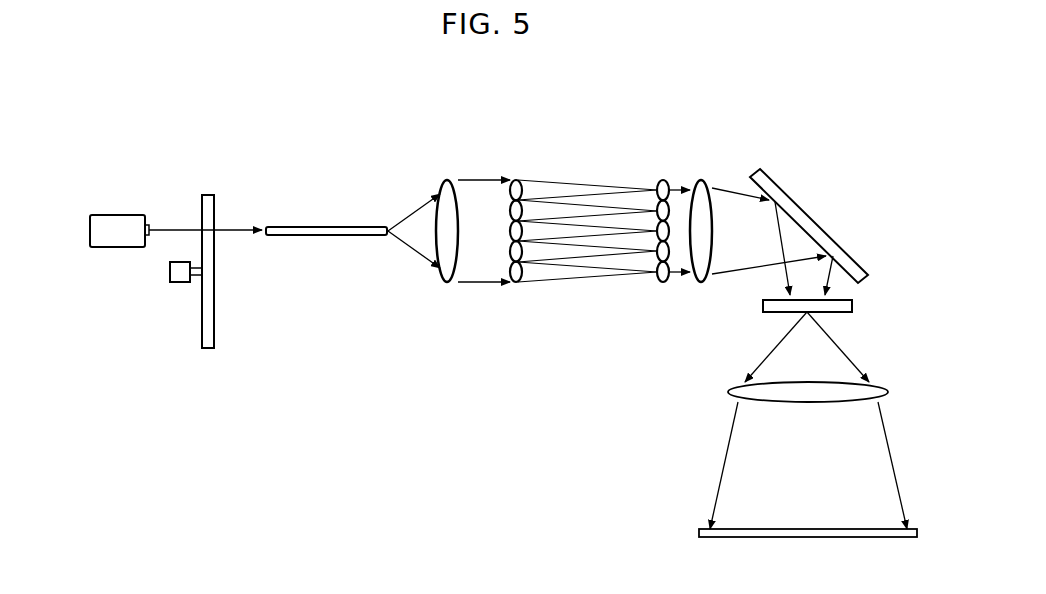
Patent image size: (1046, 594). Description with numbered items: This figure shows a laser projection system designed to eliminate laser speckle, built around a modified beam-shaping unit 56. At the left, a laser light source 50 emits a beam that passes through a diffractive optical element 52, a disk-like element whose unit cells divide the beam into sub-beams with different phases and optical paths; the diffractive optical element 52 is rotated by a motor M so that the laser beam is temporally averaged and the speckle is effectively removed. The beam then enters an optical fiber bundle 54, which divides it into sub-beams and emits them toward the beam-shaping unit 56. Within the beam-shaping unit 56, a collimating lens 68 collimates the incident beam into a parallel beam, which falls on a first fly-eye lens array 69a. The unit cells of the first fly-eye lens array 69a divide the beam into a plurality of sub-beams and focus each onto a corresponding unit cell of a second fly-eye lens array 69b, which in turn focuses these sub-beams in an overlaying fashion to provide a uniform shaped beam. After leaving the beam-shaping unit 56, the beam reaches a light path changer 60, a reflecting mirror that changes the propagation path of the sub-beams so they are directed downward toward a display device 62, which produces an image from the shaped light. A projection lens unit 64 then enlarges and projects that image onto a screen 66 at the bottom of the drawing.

The laser light source 50 is at (122, 213).
The diffractive optical element 52 is at (208, 194).
The motor M is at (181, 284).
The optical fiber bundle 54 is at (325, 225).
The beam-shaping unit 56 is at (559, 279).
The collimating lens 68 is at (447, 284).
The first fly-eye lens array 69a is at (516, 283).
The second fly-eye lens array 69b is at (662, 262).
The light path changer 60 is at (808, 212).
The display device 62 is at (853, 306).
The projection lens unit 64 is at (727, 392).
The screen 66 is at (698, 534).